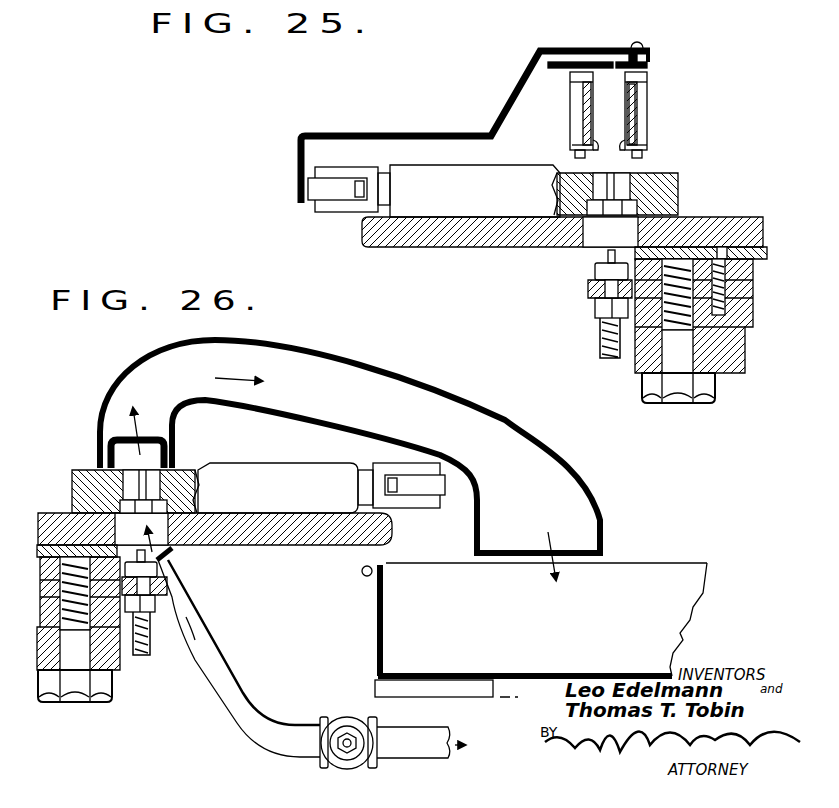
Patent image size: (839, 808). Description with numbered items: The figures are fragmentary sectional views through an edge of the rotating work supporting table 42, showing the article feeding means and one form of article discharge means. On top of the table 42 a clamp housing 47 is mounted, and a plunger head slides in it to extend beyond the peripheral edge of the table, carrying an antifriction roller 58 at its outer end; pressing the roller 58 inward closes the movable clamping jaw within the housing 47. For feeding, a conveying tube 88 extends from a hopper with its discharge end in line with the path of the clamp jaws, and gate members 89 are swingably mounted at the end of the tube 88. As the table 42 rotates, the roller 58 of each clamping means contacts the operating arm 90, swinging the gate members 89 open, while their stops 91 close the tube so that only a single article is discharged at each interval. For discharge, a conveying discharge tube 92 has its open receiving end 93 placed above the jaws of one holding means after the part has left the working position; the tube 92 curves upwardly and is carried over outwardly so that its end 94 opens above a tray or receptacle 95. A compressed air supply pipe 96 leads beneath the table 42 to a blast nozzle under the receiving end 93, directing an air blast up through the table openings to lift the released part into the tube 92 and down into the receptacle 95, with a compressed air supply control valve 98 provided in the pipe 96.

In FIG. 25, the table 42 is at (466, 244).
In FIG. 26, the table 42 is at (290, 537).
In FIG. 25, the clamp housing 47 is at (680, 185).
In FIG. 25, the antifriction roller 58 is at (333, 190).
In FIG. 25, the conveying tube 88 is at (637, 139).
In FIG. 25, the gate members 89 is at (574, 96).
In FIG. 25, the operating arm 90 is at (413, 137).
In FIG. 26, the stops 91 is at (168, 564).
In FIG. 26, the conveying discharge tube 92 is at (353, 390).
In FIG. 26, the receiving end 93 is at (122, 405).
In FIG. 26, the end 94 is at (603, 558).
In FIG. 26, the receptacle 95 is at (680, 580).
In FIG. 26, the compressed air supply pipe 96 is at (302, 745).
In FIG. 26, the compressed air supply control valve 98 is at (353, 765).